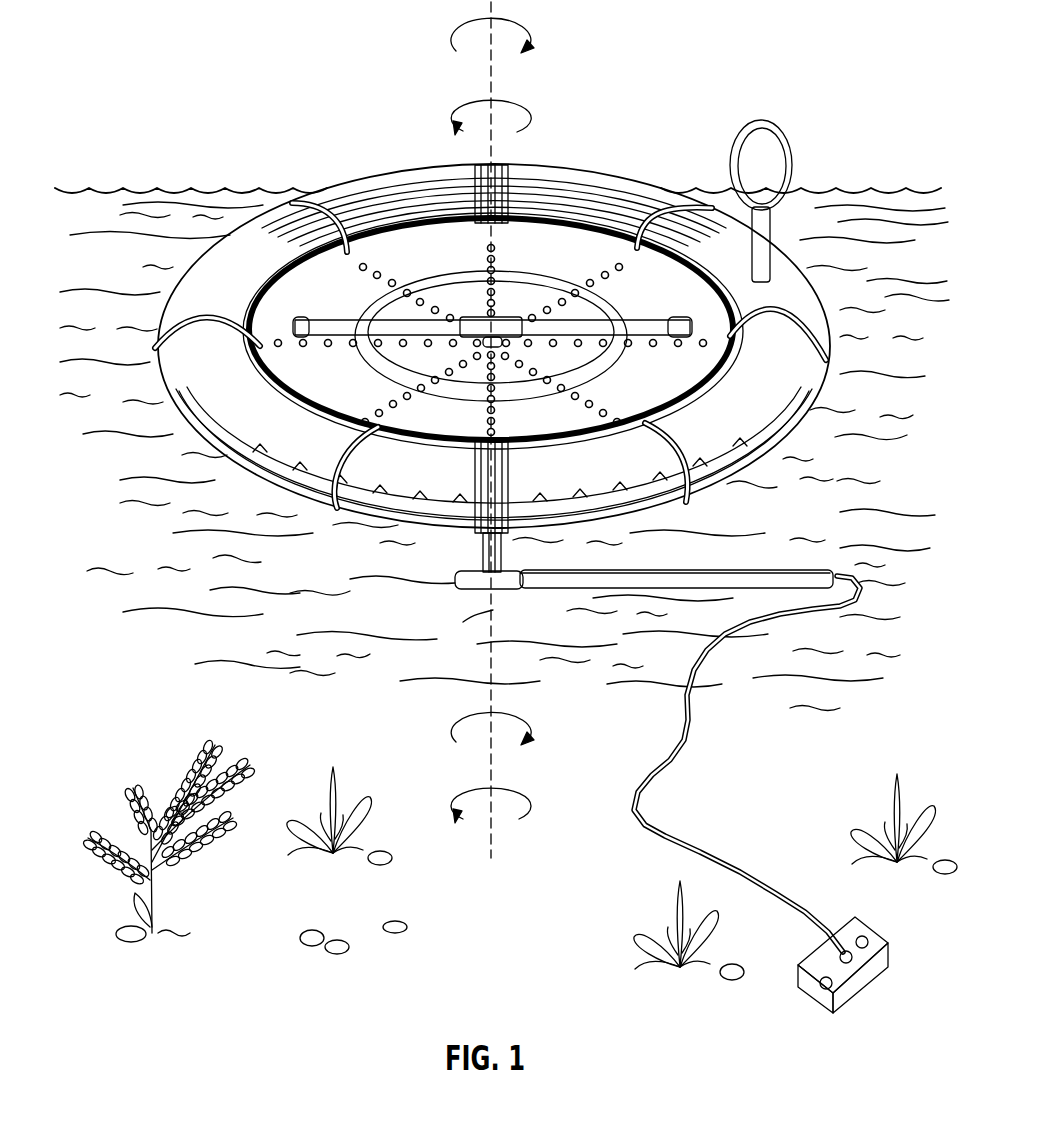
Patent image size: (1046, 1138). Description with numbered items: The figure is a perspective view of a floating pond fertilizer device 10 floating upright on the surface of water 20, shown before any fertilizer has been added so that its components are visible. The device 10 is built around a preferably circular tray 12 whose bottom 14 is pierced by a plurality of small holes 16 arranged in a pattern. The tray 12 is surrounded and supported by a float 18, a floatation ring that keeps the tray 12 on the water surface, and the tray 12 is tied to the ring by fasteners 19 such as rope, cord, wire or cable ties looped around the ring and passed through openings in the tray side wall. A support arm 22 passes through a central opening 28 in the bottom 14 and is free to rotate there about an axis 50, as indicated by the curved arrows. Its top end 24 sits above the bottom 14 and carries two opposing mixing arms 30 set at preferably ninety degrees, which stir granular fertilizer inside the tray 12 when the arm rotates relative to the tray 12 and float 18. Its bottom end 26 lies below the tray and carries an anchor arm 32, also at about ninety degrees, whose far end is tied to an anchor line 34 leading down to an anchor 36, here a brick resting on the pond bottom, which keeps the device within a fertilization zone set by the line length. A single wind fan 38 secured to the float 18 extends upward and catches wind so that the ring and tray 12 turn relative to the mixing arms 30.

The floating pond fertilizer device 10 is at (138, 124).
The tray 12 is at (412, 265).
The bottom 14 is at (556, 266).
The holes 16 is at (322, 352).
The float 18 is at (190, 373).
The fasteners 19 is at (165, 323).
The water 20 is at (108, 262).
The support arm 22 is at (480, 540).
The top end 24 is at (503, 318).
The bottom end 26 is at (485, 580).
The central opening 28 is at (490, 352).
The mixing arms 30 is at (297, 266).
The anchor arm 32 is at (808, 575).
The anchor line 34 is at (692, 714).
The anchor 36 is at (877, 947).
The wind fan 38 is at (772, 152).
The axis 50 is at (486, 838).